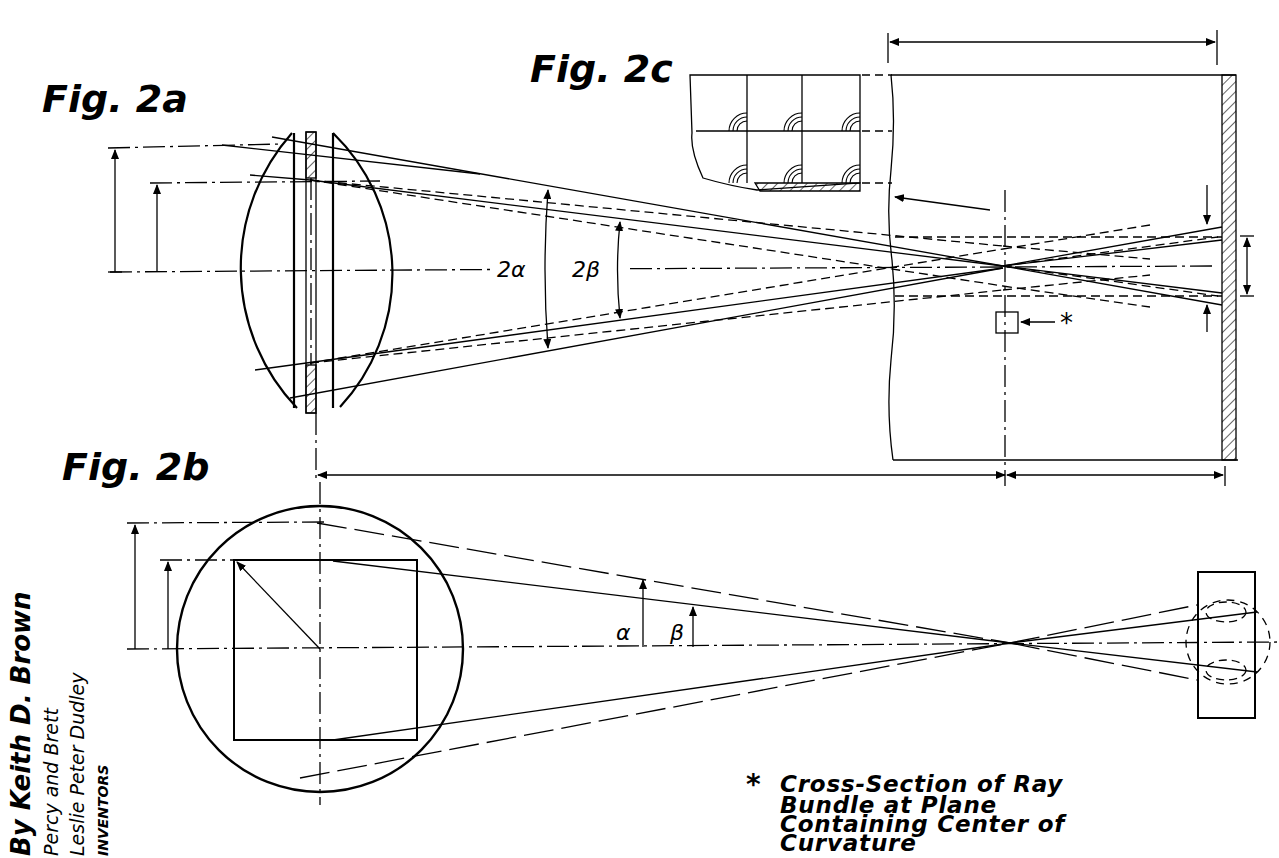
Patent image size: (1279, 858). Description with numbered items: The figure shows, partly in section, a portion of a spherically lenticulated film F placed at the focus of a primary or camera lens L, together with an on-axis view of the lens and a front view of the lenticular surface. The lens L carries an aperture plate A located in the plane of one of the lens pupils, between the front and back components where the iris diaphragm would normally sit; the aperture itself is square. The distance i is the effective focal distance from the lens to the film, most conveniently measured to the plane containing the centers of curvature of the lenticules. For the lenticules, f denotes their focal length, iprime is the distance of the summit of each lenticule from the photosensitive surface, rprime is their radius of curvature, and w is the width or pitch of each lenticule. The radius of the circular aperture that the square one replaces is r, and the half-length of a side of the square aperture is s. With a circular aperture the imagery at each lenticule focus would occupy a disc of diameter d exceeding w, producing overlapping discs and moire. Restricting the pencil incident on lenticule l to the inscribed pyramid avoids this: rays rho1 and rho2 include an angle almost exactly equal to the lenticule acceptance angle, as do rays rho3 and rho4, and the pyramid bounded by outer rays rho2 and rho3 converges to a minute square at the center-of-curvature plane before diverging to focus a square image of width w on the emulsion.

In FIG. 2A, the primary or camera lens L is at (262, 299).
In FIG. 2A, the aperture plate A is at (322, 412).
In FIG. 2B, the aperture plate A is at (343, 548).
In FIG. 2C, the spherically lenticulated film F is at (937, 425).
In FIG. 2B, the spherically lenticulated film F is at (1228, 645).
In FIG. 2C, the lenticule l is at (889, 273).
In FIG. 2A, the radius of the circular aperture r is at (183, 208).
In FIG. 2B, the radius of the circular aperture r is at (214, 585).
In FIG. 2A, the half-length of a side of the square aperture s is at (259, 226).
In FIG. 2B, the half-length of a side of the square aperture s is at (193, 604).
In FIG. 2A, the ray rho1 is at (498, 209).
In FIG. 2A, the ray rho2 is at (478, 348).
In FIG. 2A, the ray rho3 is at (462, 190).
In FIG. 2A, the ray rho4 is at (460, 338).
In FIG. 2C, the diameter of circular imagery area d is at (1199, 247).
In FIG. 2C, the width of each lenticule w is at (1255, 266).
In FIG. 2C, the effective focal distance i is at (661, 490).
In FIG. 2C, the distance of lenticule summit from photosensitive surface iprime is at (1052, 38).
In FIG. 2C, the radius of curvature of the lenticules rprime is at (942, 191).
In FIG. 2C, the focal length of the lenticules f is at (1116, 485).